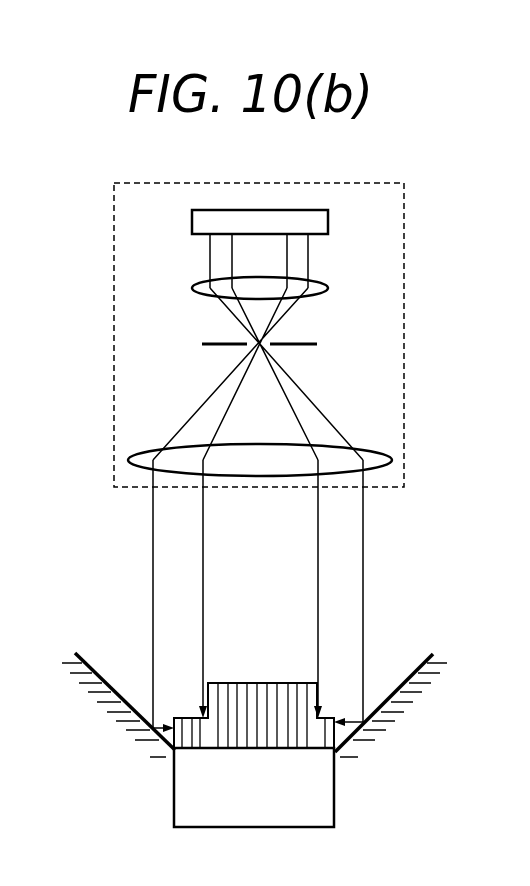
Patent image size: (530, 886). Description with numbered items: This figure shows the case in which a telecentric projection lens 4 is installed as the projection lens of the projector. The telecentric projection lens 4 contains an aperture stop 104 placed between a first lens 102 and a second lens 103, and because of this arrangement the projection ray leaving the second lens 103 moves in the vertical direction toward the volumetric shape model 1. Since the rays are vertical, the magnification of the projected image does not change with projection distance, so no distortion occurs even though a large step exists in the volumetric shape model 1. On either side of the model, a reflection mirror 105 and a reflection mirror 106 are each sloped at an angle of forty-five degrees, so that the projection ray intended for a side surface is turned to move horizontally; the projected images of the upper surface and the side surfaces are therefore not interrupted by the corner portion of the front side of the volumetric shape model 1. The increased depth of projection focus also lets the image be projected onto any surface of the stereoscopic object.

The volumetric shape model 1 is at (259, 668).
The telecentric projection lens 4 is at (113, 228).
The lens 102 is at (192, 289).
The lens 103 is at (130, 461).
The aperture stop 104 is at (203, 346).
The reflection mirror 105 is at (88, 665).
The reflection mirror 106 is at (418, 664).